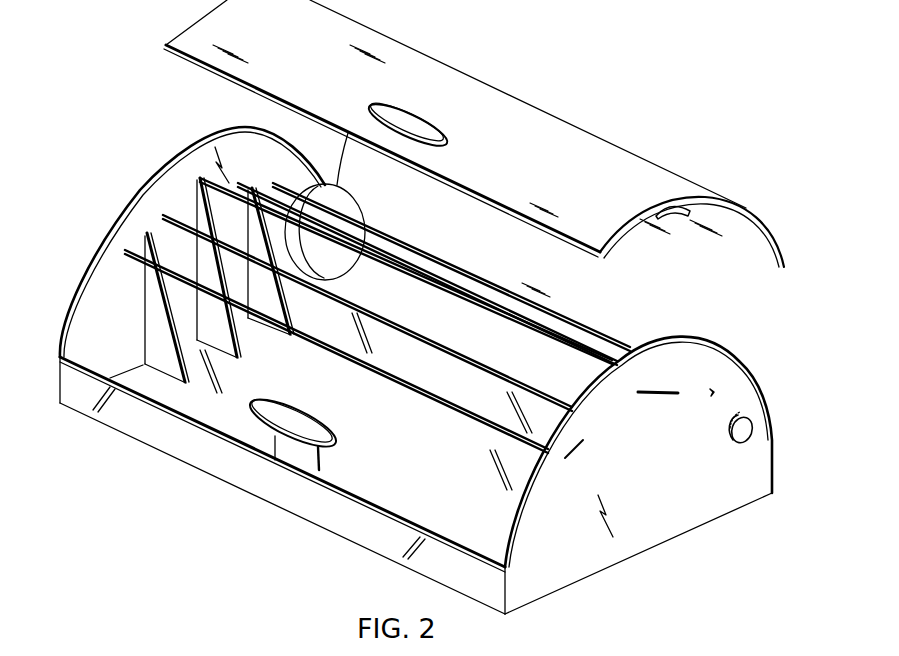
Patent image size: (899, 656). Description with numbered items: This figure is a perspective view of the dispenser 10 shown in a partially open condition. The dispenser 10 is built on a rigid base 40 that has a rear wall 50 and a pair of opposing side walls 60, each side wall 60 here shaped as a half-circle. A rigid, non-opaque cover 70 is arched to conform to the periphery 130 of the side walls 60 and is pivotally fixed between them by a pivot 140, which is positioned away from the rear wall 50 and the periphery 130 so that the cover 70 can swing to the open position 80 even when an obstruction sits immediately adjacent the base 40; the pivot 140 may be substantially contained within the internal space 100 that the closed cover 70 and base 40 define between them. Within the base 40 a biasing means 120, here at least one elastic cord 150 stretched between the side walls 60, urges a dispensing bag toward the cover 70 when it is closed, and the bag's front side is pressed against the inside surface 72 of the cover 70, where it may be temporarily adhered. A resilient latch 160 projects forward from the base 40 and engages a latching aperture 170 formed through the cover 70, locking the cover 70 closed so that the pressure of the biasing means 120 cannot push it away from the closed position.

The dispenser 10 is at (812, 188).
The rigid base 40 is at (233, 488).
The rear wall 50 is at (416, 460).
The side walls 60 is at (80, 262).
The cover 70 is at (613, 157).
The inside surface 72 is at (706, 227).
The open position 80 is at (155, 112).
The internal space 100 is at (262, 372).
The biasing means 120 is at (570, 308).
The periphery 130 is at (657, 352).
The pivot 140 is at (745, 432).
The elastic cord 150 is at (390, 243).
The resilient latch 160 is at (297, 433).
The latching aperture 170 is at (423, 125).